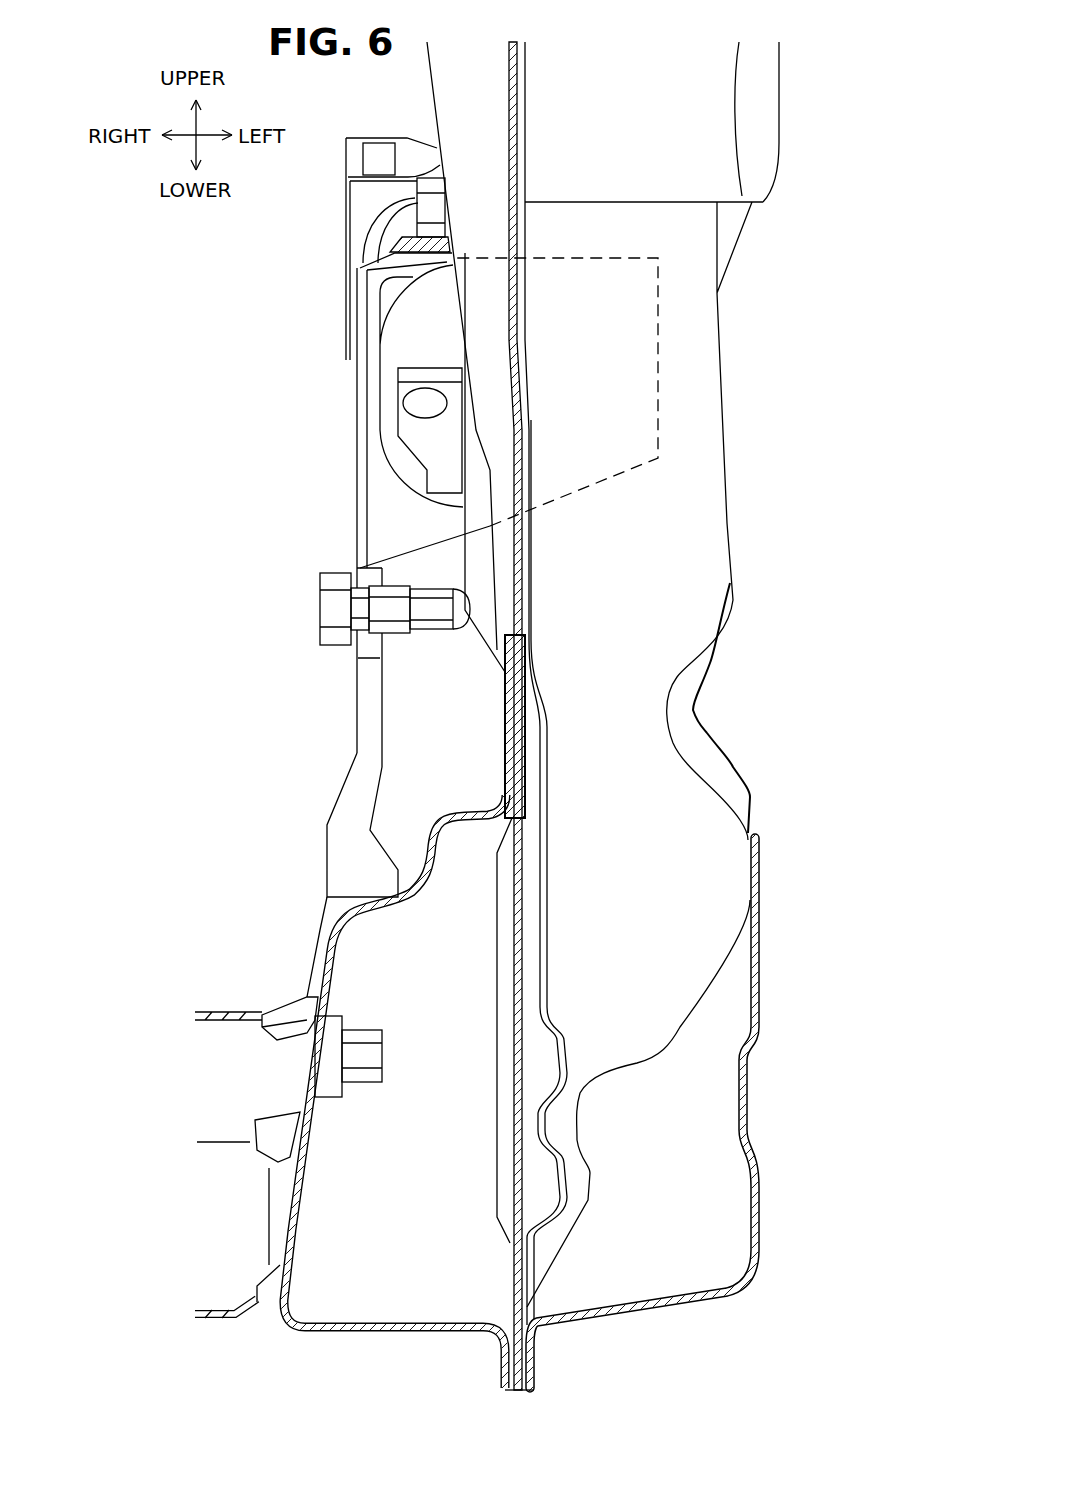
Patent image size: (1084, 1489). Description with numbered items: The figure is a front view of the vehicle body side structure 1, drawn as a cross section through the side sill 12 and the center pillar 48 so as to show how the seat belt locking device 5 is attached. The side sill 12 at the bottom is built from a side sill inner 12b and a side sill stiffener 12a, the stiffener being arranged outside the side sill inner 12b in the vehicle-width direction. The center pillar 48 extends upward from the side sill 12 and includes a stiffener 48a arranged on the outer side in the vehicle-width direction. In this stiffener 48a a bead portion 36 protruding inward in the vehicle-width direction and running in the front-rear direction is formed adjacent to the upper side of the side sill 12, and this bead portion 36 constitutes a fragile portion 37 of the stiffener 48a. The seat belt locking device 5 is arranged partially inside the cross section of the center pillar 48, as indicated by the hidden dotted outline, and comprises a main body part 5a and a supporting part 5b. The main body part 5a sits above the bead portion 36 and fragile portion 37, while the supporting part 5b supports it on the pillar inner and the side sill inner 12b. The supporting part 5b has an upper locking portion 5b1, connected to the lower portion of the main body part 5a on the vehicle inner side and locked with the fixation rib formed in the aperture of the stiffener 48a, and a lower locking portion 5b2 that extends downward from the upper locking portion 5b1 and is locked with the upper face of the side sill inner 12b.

The vehicle body side structure 1 is at (839, 179).
The seat belt locking device 5 is at (240, 460).
The main body part 5a is at (398, 332).
The supporting part 5b is at (372, 718).
The upper locking portion 5b1 is at (433, 607).
The lower locking portion 5b2 is at (350, 892).
The side sill 12 is at (467, 1202).
The side sill stiffener 12a is at (668, 1307).
The side sill inner 12b is at (367, 1333).
The bead portion 36 is at (693, 710).
The fragile portion 37 is at (693, 710).
The center pillar 48 is at (720, 365).
The stiffener 48a is at (720, 365).